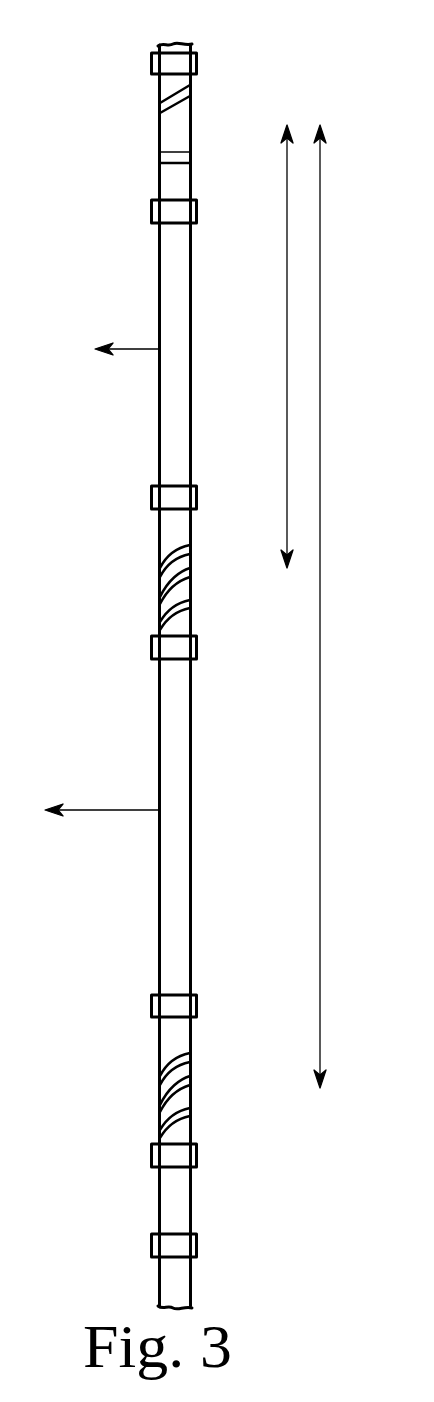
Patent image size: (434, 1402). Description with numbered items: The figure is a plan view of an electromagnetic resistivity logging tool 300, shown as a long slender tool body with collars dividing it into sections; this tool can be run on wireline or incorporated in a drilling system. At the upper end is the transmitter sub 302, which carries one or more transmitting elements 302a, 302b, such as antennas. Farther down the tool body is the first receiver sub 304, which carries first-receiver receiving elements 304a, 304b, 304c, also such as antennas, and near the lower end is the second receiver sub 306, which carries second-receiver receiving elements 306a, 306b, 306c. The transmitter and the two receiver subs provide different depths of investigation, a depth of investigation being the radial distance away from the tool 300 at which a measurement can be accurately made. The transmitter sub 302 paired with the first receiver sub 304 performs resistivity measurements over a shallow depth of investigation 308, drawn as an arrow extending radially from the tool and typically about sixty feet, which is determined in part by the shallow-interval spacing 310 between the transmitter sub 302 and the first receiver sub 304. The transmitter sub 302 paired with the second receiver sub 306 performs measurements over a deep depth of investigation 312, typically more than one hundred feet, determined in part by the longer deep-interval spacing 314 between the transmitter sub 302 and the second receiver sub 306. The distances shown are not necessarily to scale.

The electromagnetic resistivity logging tool 300 is at (240, 48).
The transmitter sub 302 is at (192, 133).
The transmitting element 302a is at (158, 107).
The transmitting element 302b is at (158, 155).
The first receiver sub 304 is at (192, 532).
The first-receiver receiving element 304a is at (158, 559).
The first-receiver receiving element 304b is at (158, 595).
The first-receiver receiving element 304c is at (158, 622).
The second receiver sub 306 is at (192, 1038).
The second-receiver receiving element 306a is at (158, 1066).
The second-receiver receiving element 306b is at (158, 1100).
The second-receiver receiving element 306c is at (158, 1127).
The shallow depth of investigation 308 is at (140, 346).
The shallow-interval spacing 310 is at (286, 330).
The deep depth of investigation 312 is at (118, 806).
The deep-interval spacing 314 is at (319, 752).